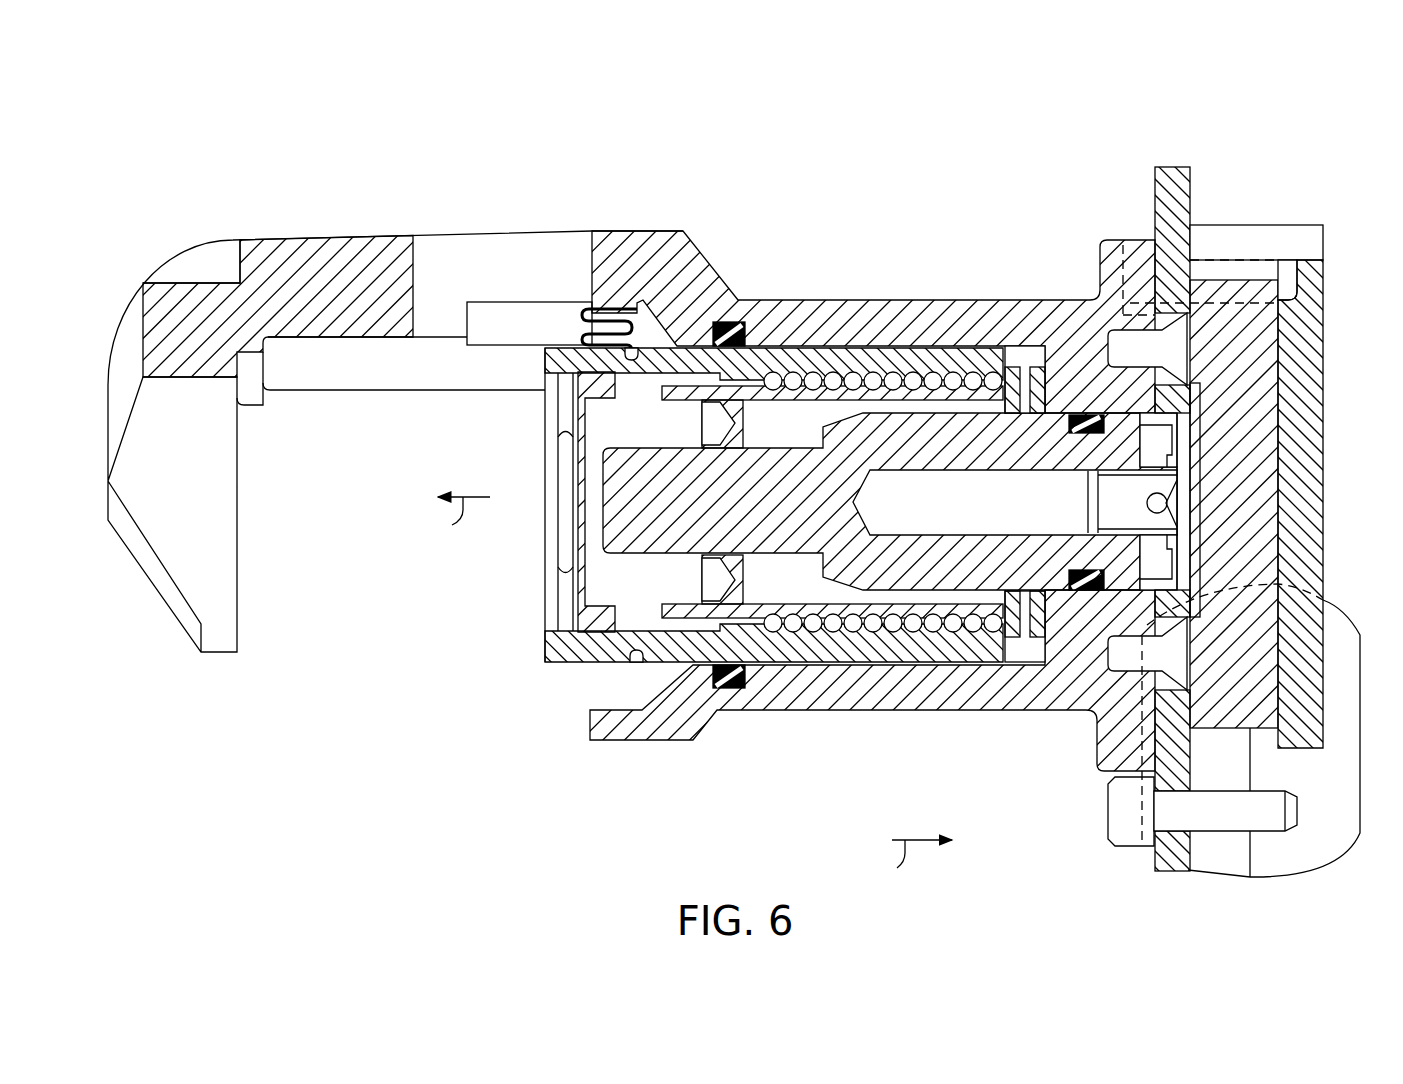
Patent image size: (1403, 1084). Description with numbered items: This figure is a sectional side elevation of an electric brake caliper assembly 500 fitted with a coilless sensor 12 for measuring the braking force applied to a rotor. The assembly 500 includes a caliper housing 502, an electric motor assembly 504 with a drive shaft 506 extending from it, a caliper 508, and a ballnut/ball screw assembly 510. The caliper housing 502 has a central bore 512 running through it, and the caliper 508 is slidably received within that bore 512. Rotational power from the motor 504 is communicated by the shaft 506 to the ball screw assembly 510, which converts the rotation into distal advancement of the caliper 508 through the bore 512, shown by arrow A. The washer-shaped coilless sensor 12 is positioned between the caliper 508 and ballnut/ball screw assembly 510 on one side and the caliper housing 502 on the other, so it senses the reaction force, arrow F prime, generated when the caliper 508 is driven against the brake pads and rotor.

The electric brake caliper assembly 500 is at (982, 150).
The caliper housing 502 is at (624, 229).
The electric motor assembly 504 is at (1262, 370).
The drive shaft 506 is at (905, 578).
The caliper 508 is at (562, 652).
The ballnut/ball screw assembly 510 is at (893, 370).
The central bore 512 is at (775, 356).
The coilless sensor 12 is at (1028, 365).